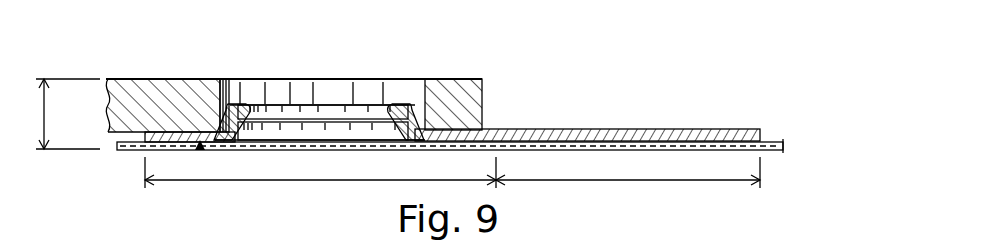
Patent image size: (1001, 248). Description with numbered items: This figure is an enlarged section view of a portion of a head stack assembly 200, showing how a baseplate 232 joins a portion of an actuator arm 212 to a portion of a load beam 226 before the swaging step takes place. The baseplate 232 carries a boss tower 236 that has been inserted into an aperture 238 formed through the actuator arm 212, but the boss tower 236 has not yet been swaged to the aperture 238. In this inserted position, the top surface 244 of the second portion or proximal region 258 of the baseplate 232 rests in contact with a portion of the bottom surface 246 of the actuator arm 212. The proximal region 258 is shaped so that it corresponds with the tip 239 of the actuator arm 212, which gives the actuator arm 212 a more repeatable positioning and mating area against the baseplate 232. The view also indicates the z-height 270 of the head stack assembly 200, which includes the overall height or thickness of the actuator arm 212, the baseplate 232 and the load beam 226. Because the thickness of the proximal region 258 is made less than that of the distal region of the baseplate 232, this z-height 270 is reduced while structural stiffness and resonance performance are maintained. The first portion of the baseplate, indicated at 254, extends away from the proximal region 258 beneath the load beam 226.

The head stack assembly 200 is at (242, 52).
The actuator arm 212 is at (160, 95).
The aperture 238 is at (248, 90).
The boss tower 236 is at (402, 104).
The tip 239 is at (483, 92).
The baseplate 232 is at (575, 128).
The load beam 226 is at (655, 148).
The second region 254 is at (625, 180).
The proximal region 258 is at (325, 185).
The bottom surface 246 is at (200, 150).
The top surface 244 is at (131, 115).
The z-height 270 is at (48, 132).